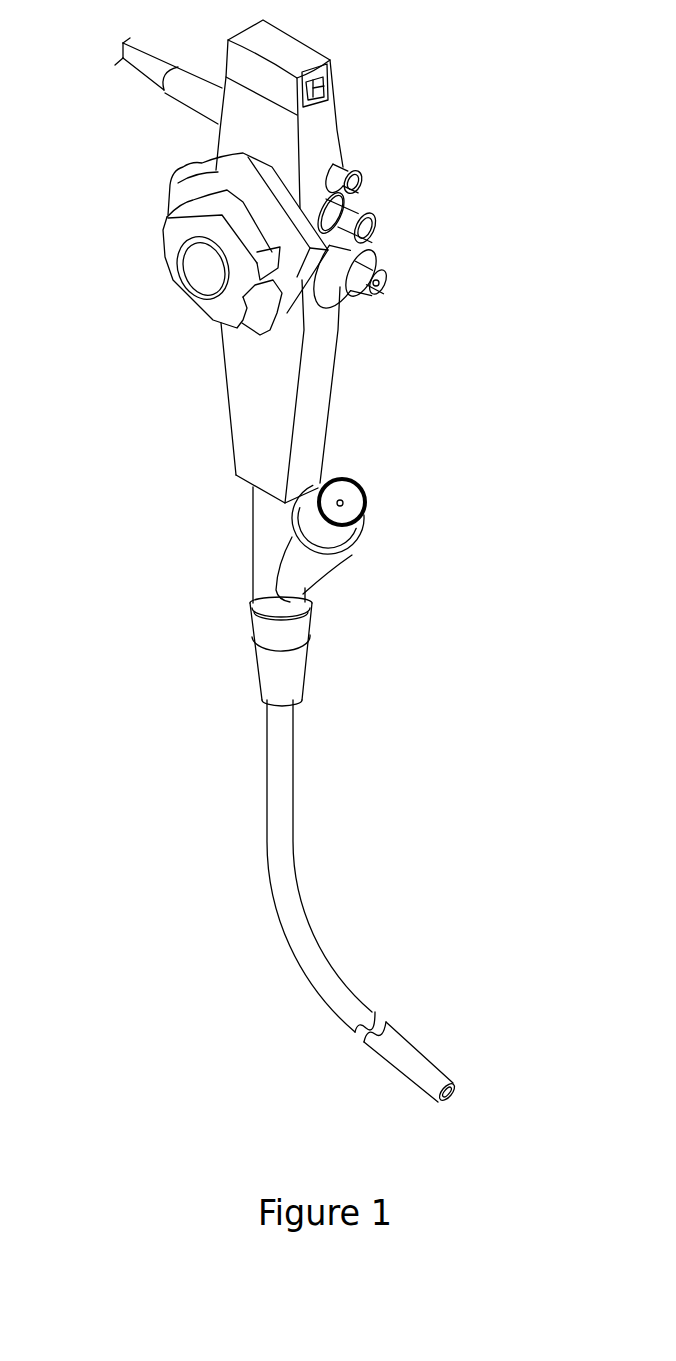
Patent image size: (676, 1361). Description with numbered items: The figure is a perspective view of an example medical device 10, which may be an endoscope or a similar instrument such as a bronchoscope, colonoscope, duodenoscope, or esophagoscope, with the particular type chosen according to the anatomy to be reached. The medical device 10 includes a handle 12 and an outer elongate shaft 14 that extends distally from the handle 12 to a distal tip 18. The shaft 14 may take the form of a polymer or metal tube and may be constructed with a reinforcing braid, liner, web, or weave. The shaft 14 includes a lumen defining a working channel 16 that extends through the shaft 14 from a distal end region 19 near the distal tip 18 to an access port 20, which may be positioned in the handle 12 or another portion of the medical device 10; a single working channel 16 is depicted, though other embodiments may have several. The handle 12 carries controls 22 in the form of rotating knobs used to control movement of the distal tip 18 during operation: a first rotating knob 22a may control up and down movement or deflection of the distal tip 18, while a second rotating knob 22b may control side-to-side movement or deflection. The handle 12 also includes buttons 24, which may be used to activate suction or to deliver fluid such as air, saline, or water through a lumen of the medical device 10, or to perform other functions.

The medical device 10 is at (463, 307).
The handle 12 is at (365, 343).
The outer elongate shaft 14 is at (347, 895).
The working channel 16 is at (448, 1100).
The distal tip 18 is at (457, 1072).
The distal end region 19 is at (438, 1101).
The access port 20 is at (357, 565).
The controls 22 is at (158, 296).
The first rotating knob 22a is at (165, 228).
The second rotating knob 22b is at (178, 183).
The buttons 24 is at (334, 84).